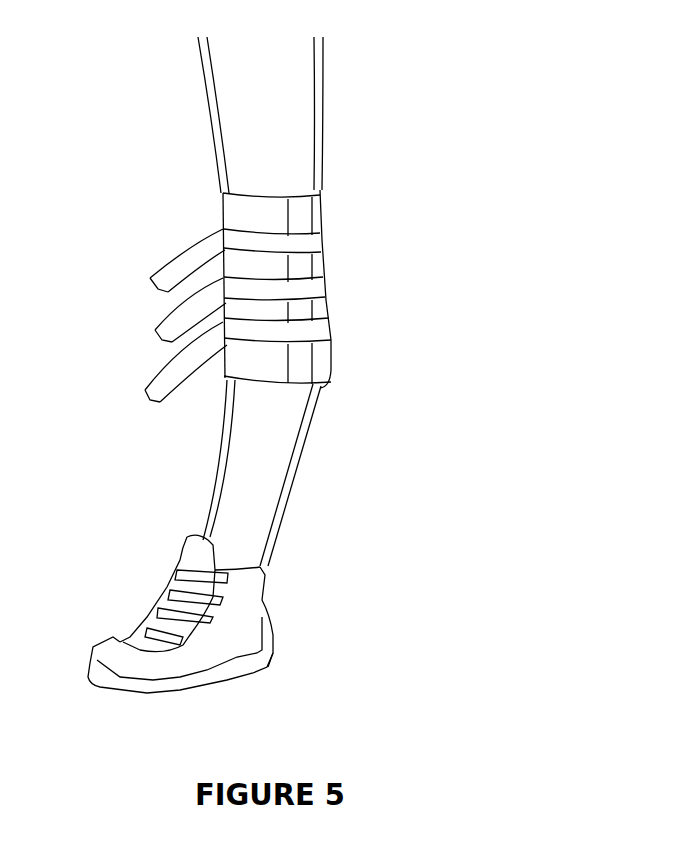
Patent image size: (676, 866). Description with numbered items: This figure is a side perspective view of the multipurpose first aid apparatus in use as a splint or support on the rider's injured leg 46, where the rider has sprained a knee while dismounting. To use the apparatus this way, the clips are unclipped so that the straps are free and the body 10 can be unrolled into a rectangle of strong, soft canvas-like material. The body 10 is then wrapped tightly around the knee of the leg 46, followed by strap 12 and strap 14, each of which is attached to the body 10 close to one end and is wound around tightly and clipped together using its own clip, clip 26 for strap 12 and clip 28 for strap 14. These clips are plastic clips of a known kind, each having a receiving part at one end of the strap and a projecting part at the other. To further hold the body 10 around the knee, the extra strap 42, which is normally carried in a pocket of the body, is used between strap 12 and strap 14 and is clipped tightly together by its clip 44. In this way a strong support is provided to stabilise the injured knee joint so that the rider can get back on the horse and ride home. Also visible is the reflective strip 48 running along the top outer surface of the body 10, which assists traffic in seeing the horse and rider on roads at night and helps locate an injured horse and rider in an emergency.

The body 10 is at (240, 213).
The rider's leg 46 is at (282, 133).
The reflective strip 48 is at (298, 215).
The strap 14 is at (305, 242).
The extra strap 42 is at (308, 287).
The strap 12 is at (308, 332).
The clip 28 is at (227, 243).
The clip 44 is at (225, 284).
The clip 26 is at (225, 330).